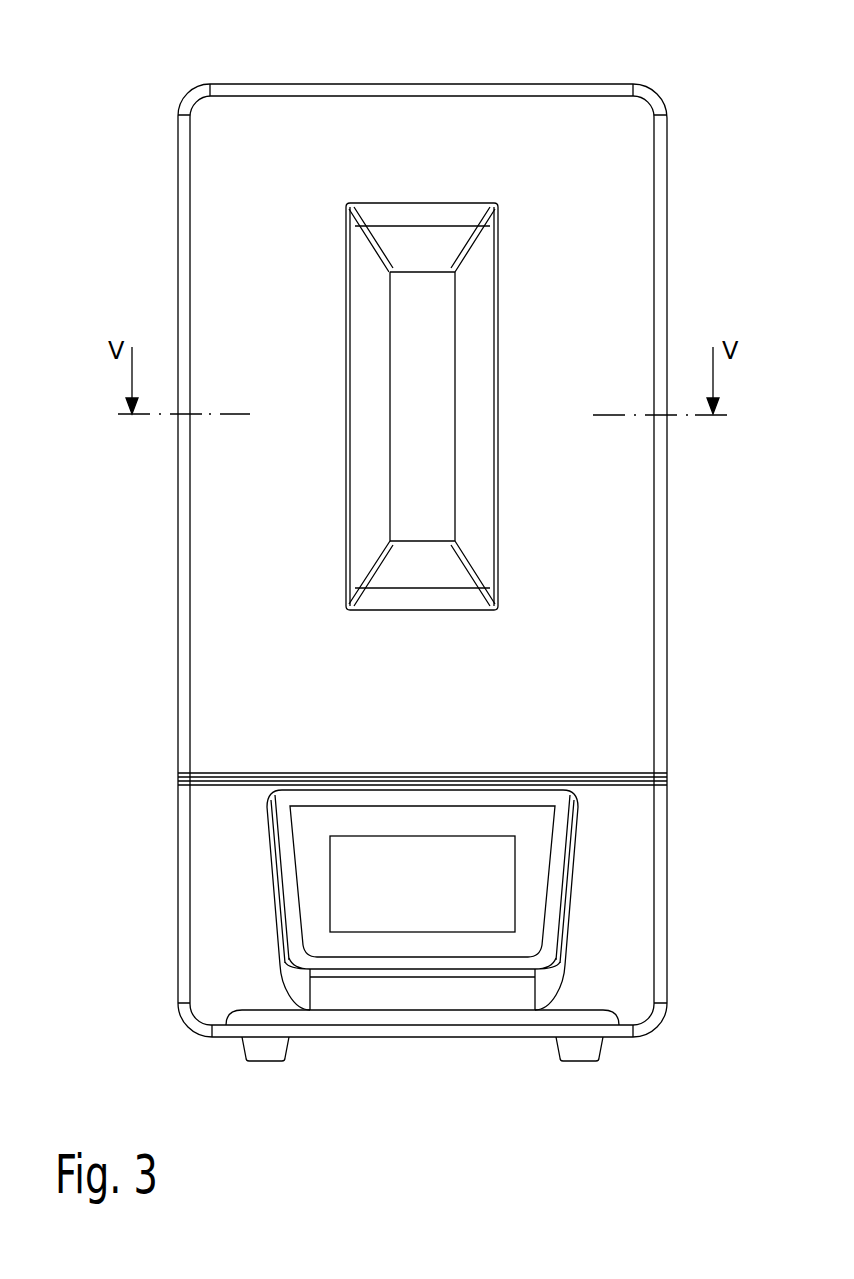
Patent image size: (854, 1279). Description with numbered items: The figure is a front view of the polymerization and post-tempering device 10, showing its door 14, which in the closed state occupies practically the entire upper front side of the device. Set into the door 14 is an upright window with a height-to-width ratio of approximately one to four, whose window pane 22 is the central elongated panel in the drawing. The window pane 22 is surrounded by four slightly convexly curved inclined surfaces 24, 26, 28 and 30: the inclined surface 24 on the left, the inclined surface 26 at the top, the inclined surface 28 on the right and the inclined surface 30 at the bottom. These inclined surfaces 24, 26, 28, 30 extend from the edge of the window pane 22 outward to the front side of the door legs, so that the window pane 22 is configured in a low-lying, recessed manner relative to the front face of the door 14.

The polymerization and post-tempering device 10 is at (252, 130).
The door 14 is at (600, 130).
The window pane 22 is at (428, 337).
The inclined surface 24 is at (365, 300).
The inclined surface 26 is at (433, 247).
The inclined surface 28 is at (475, 299).
The inclined surface 30 is at (388, 563).